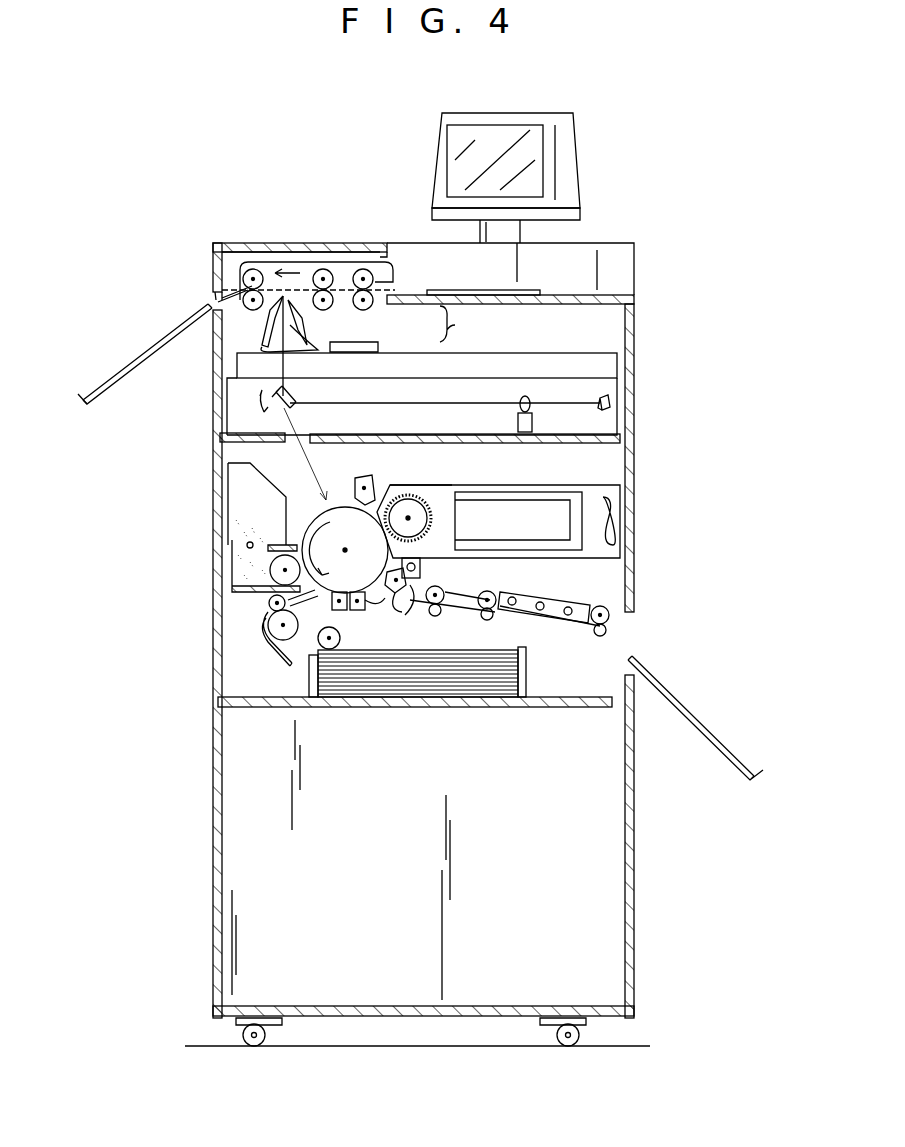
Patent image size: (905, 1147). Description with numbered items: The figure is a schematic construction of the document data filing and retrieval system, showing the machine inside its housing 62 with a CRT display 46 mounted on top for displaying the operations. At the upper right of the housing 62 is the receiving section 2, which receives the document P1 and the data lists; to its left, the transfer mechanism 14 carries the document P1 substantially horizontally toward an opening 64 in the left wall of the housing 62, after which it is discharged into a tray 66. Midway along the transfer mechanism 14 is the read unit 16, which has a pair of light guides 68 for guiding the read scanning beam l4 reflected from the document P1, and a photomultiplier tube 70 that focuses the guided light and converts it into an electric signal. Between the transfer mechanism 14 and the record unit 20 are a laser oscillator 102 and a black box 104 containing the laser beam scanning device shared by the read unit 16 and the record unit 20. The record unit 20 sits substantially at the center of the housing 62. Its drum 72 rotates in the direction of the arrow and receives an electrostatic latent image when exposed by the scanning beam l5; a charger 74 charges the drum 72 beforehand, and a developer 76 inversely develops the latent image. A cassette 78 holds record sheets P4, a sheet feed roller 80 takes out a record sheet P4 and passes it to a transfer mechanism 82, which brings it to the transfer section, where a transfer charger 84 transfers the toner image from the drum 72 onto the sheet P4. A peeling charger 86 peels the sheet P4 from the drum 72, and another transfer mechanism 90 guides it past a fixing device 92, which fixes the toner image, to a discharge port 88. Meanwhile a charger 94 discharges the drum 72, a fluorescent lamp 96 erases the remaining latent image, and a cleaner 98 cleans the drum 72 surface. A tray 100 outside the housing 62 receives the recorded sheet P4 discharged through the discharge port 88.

The receiving section 2 is at (560, 282).
The transfer mechanism 14 is at (300, 243).
The read unit 16 is at (486, 337).
The record unit 20 is at (569, 470).
The CRT display 46 is at (575, 160).
The housing 62 is at (636, 322).
The opening 64 is at (215, 296).
The tray 66 is at (150, 375).
The light guides 68 is at (258, 324).
The photomultiplier tube 70 is at (380, 343).
The drum 72 is at (338, 505).
The charger 74 is at (372, 476).
The developer 76 is at (296, 520).
The cassette 78 is at (526, 680).
The sheet feed roller 80 is at (340, 640).
The transfer mechanism 82 is at (262, 612).
The transfer charger 84 is at (332, 610).
The peeling charger 86 is at (370, 604).
The discharge port 88 is at (625, 640).
The transfer mechanism 90 is at (440, 590).
The fixing device 92 is at (553, 597).
The charger 94 is at (425, 612).
The fluorescent lamp 96 is at (420, 568).
The cleaner 98 is at (455, 484).
The tray 100 is at (690, 740).
The laser oscillator 102 is at (615, 370).
The black box 104 is at (615, 418).
The read scanning beam l4 is at (282, 370).
The scanning beam l5 is at (302, 468).
The document P1 is at (428, 290).
The record sheet P4 is at (440, 700).